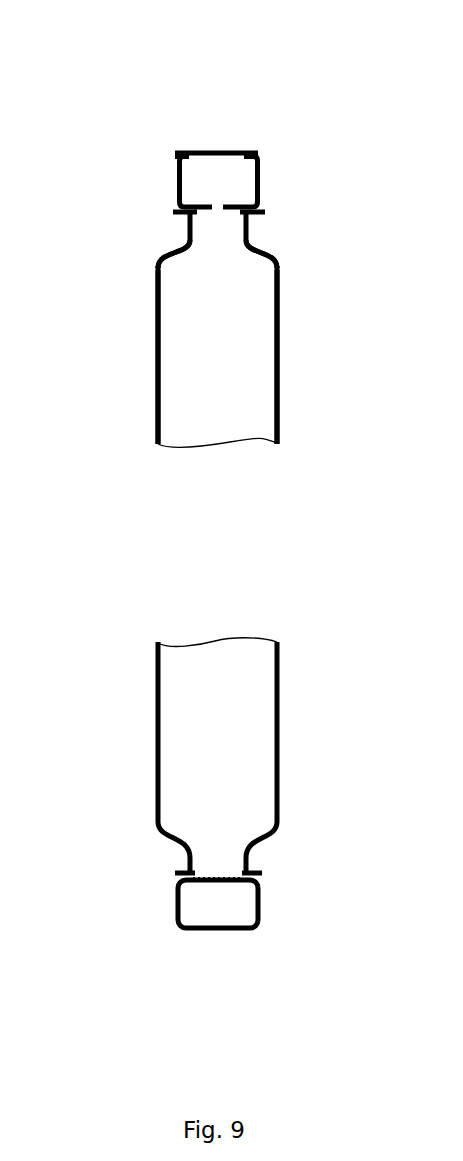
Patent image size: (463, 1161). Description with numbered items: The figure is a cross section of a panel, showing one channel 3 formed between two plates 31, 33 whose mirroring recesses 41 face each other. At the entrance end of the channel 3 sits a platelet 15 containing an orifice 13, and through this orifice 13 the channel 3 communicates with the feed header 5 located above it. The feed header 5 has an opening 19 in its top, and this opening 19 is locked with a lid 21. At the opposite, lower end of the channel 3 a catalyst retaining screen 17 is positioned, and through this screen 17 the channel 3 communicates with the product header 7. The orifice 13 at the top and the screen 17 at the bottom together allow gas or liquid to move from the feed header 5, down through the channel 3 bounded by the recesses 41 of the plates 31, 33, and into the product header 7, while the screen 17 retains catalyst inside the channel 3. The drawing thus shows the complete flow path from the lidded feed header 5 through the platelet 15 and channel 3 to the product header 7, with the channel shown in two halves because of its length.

The channel 3 is at (217, 544).
The feed header 5 is at (227, 190).
The lid 21 is at (196, 153).
The opening 19 is at (220, 158).
The orifice 13 is at (212, 205).
The platelet 15 is at (262, 212).
The mirroring recesses 41 is at (170, 283).
The plate 31 is at (158, 404).
The plate 33 is at (280, 390).
The catalyst retaining screen 17 is at (204, 878).
The product header 7 is at (222, 908).